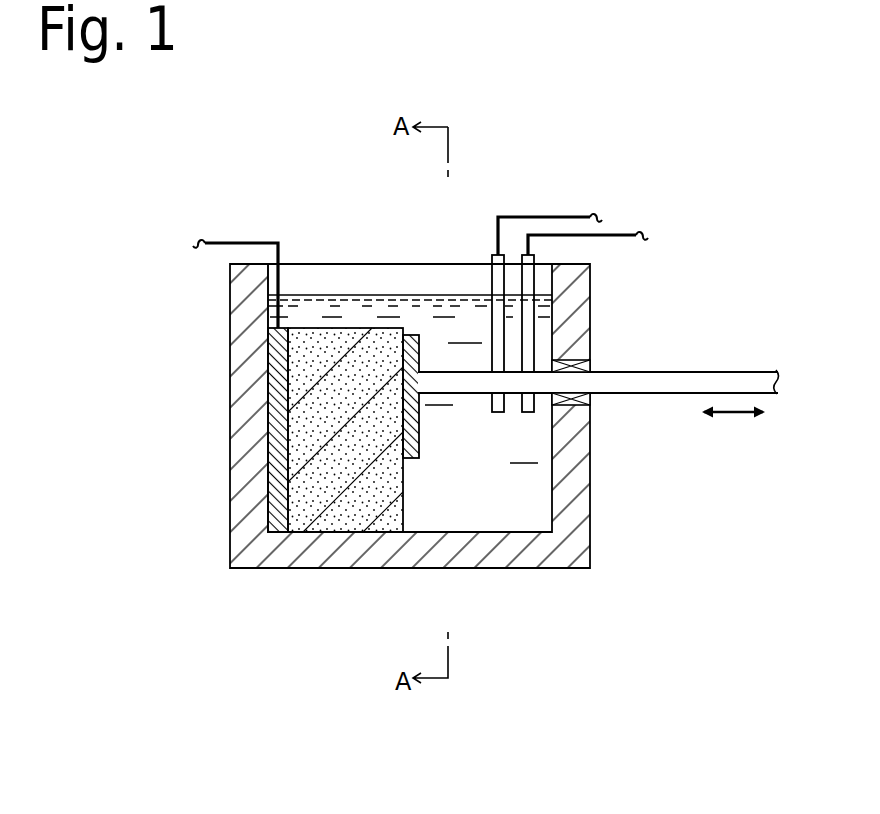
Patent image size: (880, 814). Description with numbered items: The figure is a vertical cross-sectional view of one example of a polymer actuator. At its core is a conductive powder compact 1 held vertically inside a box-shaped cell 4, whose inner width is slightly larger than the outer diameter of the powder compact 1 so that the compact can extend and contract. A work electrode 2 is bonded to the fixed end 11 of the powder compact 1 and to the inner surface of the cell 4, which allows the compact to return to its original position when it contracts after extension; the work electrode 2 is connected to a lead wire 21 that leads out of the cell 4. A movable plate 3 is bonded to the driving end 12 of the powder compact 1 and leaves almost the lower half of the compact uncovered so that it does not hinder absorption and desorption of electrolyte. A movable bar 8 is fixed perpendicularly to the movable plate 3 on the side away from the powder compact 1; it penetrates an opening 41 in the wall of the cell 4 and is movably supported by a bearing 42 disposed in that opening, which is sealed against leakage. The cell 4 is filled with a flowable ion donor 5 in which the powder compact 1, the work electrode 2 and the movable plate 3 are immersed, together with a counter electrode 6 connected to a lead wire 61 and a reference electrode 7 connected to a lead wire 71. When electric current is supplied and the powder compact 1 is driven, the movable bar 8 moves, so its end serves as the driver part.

The conductive powder compact 1 is at (295, 423).
The work electrode 2 is at (291, 479).
The movable plate 3 is at (412, 342).
The cell 4 is at (578, 498).
The ion donor 5 is at (303, 307).
The counter electrode 6 is at (495, 283).
The reference electrode 7 is at (522, 283).
The movable bar 8 is at (740, 380).
The fixed end 11 is at (297, 510).
The driving end 12 is at (400, 510).
The lead wire 21 is at (217, 243).
The opening 41 is at (578, 386).
The bearing 42 is at (576, 402).
The lead wire 61 is at (577, 215).
The lead wire 71 is at (612, 234).